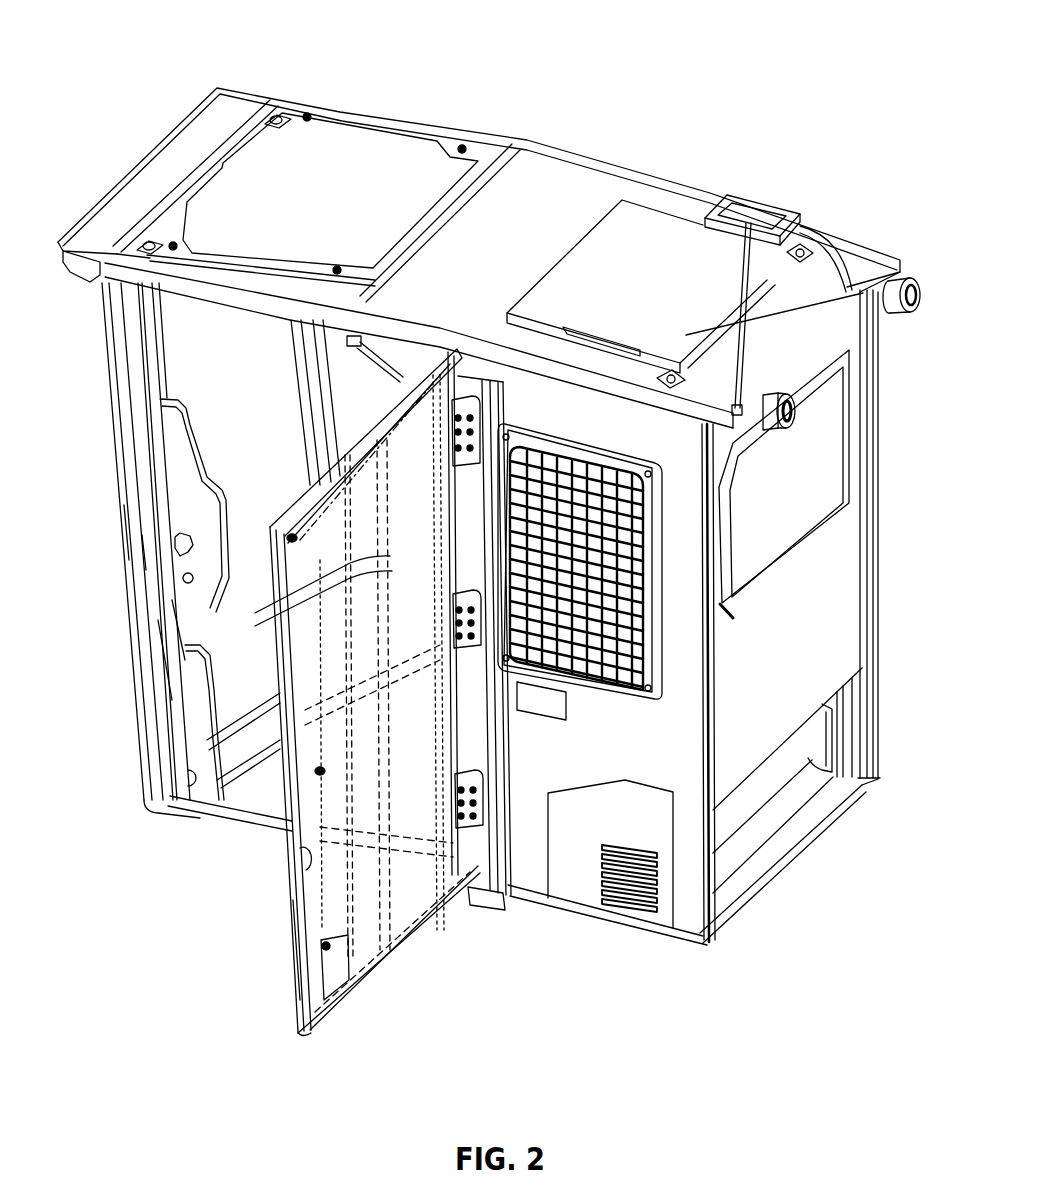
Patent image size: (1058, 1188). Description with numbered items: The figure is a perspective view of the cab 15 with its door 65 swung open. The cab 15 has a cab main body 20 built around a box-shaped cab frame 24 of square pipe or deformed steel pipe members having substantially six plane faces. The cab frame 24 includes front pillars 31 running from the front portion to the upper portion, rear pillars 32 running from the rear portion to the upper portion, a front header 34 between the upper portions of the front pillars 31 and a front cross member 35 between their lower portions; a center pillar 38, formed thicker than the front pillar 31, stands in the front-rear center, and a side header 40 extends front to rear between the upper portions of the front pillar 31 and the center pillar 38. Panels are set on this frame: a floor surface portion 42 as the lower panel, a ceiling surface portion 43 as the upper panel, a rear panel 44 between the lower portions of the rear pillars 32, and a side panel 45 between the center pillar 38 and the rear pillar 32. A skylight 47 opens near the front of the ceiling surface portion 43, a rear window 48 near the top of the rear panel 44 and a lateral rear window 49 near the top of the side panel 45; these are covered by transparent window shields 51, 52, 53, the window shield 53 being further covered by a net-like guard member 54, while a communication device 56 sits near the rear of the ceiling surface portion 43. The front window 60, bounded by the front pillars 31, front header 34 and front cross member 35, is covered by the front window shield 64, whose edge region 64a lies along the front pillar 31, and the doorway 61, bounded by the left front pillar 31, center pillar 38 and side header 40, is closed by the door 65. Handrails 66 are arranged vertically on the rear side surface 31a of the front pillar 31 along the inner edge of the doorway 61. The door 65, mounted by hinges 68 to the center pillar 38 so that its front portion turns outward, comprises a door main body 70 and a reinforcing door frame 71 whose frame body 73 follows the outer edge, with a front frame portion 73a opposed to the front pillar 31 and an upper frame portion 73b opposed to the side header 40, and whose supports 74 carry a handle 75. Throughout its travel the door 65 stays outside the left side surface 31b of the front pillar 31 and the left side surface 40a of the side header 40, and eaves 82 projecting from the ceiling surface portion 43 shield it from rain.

The cab 15 is at (612, 95).
The cab main body 20 is at (885, 641).
The cab frame 24 is at (140, 478).
The front pillar 31 is at (132, 375).
The rear side surface 31a is at (185, 633).
The left side surface 31b is at (170, 670).
The rear pillar 32 is at (715, 908).
The front header 34 is at (128, 333).
The front cross member 35 is at (230, 743).
The center pillar 38 is at (484, 848).
The side header 40 is at (270, 305).
The left side surface 40a is at (222, 300).
The floor surface portion 42 is at (266, 780).
The ceiling surface portion 43 is at (520, 160).
The rear panel 44 is at (838, 575).
The side panel 45 is at (576, 882).
The skylight 47 is at (405, 132).
The rear window 48 is at (857, 483).
The lateral rear window 49 is at (593, 668).
The window shield 51 is at (340, 150).
The window shield 52 is at (835, 424).
The window shield 53 is at (640, 683).
The net-like guard member 54 is at (553, 690).
The communication device 56 is at (660, 205).
The front window 60 is at (190, 582).
The doorway 61 is at (190, 772).
The front window shield 64 is at (124, 516).
The pillar flange edge 64a is at (142, 548).
The door 65 is at (300, 1046).
The handrail 66 is at (170, 430).
The hinge 68 is at (460, 400).
The door main body 70 is at (366, 935).
The door frame 71 is at (300, 946).
The frame body 73 is at (290, 512).
The front frame portion 73a is at (300, 859).
The upper frame portion 73b is at (446, 360).
The supports 74 is at (340, 580).
The handle 75 is at (335, 675).
The eaves 82 is at (115, 270).